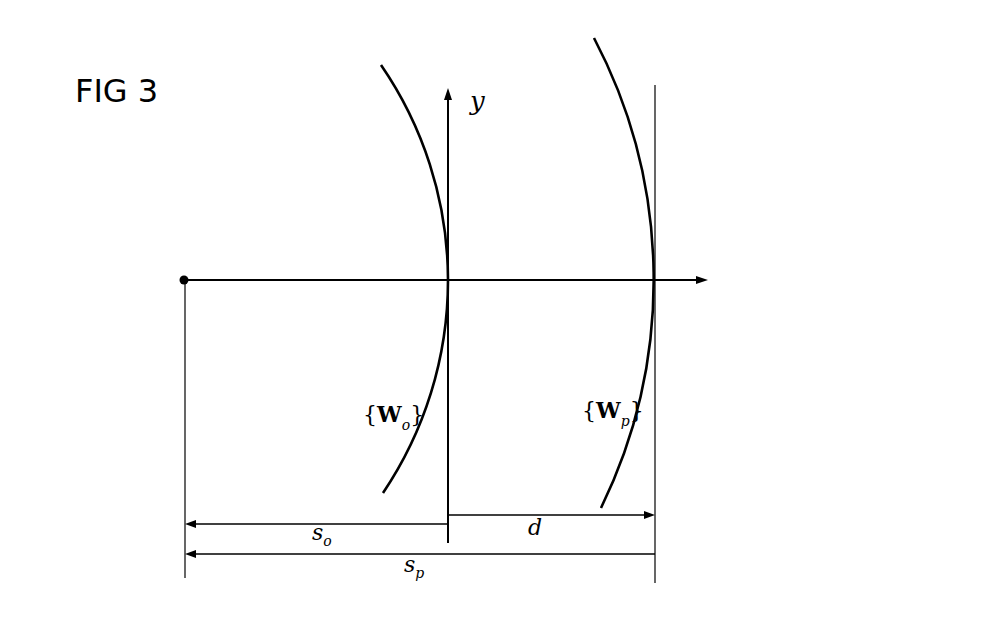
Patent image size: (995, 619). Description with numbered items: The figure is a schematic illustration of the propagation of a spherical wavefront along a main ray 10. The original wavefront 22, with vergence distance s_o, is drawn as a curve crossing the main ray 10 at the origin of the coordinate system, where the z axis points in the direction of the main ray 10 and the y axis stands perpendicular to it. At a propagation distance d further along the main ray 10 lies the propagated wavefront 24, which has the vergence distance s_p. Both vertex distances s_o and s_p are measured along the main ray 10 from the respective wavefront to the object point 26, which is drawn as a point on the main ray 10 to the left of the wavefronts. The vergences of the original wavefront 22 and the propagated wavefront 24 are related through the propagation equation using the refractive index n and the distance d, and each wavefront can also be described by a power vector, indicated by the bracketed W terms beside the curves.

The main ray 10 is at (334, 278).
The original wavefront 22 is at (394, 82).
The propagated wavefront 24 is at (613, 79).
The object point 26 is at (181, 283).